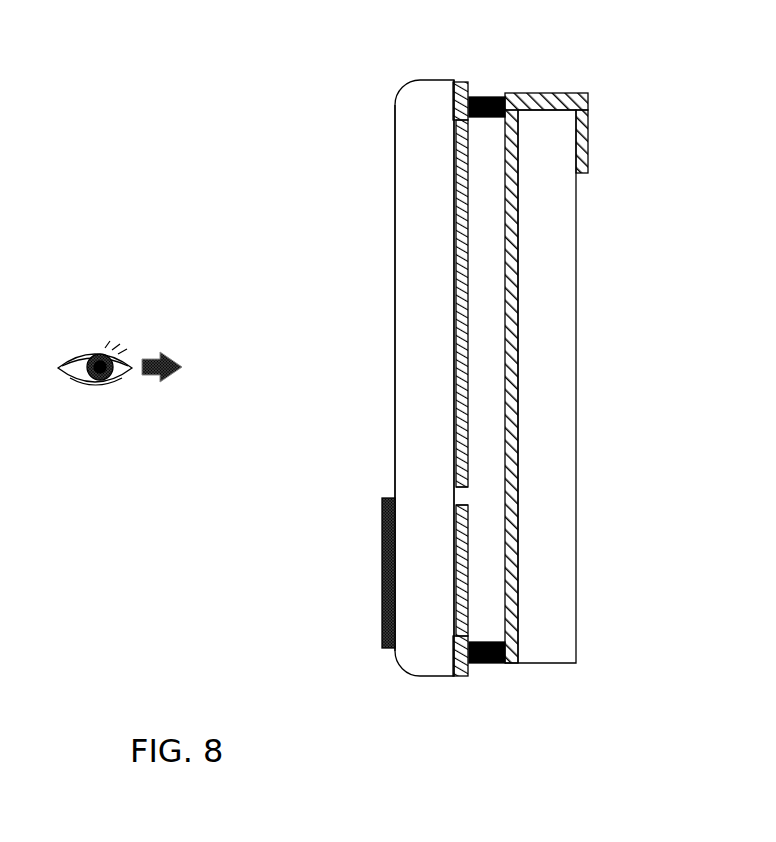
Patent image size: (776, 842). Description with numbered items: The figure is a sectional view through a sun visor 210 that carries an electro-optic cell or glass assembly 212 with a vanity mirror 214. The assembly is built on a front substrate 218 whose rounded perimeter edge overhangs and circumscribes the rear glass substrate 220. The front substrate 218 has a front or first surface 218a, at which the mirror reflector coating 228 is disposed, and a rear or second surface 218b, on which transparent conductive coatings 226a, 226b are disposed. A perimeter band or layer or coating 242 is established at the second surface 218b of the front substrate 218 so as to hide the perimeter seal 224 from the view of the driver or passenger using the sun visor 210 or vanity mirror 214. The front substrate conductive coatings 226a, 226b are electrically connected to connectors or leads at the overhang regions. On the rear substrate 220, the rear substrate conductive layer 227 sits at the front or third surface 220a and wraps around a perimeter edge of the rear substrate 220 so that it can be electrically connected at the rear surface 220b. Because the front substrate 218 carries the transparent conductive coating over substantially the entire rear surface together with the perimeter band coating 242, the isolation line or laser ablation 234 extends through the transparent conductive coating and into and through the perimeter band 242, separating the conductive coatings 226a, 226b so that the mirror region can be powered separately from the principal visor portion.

The sun visor 210 is at (195, 232).
The electro-optic cell or glass assembly 212 is at (350, 135).
The vanity mirror 214 is at (353, 548).
The front substrate 218 is at (380, 240).
The first surface of front substrate 218a is at (395, 307).
The second surface of front substrate 218b is at (454, 348).
The rear glass substrate 220 is at (607, 260).
The third surface of rear glass substrate 220a is at (520, 350).
The rear surface of rear substrate 220b is at (577, 405).
The perimeter seal 224 is at (495, 663).
The transparent conductive coating 226a is at (455, 405).
The transparent conductive coating 226b is at (453, 593).
The rear substrate conductive layer 227 is at (518, 500).
The mirror reflector coating 228 is at (381, 603).
The isolation line or laser ablation 234 is at (463, 496).
The perimeter band or layer or coating 242 is at (467, 95).